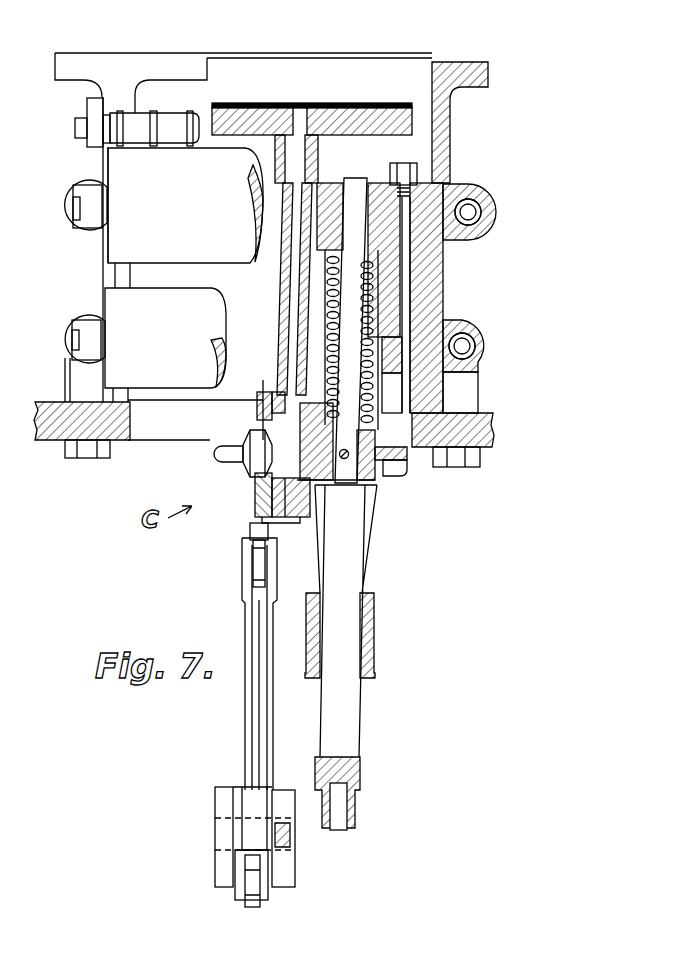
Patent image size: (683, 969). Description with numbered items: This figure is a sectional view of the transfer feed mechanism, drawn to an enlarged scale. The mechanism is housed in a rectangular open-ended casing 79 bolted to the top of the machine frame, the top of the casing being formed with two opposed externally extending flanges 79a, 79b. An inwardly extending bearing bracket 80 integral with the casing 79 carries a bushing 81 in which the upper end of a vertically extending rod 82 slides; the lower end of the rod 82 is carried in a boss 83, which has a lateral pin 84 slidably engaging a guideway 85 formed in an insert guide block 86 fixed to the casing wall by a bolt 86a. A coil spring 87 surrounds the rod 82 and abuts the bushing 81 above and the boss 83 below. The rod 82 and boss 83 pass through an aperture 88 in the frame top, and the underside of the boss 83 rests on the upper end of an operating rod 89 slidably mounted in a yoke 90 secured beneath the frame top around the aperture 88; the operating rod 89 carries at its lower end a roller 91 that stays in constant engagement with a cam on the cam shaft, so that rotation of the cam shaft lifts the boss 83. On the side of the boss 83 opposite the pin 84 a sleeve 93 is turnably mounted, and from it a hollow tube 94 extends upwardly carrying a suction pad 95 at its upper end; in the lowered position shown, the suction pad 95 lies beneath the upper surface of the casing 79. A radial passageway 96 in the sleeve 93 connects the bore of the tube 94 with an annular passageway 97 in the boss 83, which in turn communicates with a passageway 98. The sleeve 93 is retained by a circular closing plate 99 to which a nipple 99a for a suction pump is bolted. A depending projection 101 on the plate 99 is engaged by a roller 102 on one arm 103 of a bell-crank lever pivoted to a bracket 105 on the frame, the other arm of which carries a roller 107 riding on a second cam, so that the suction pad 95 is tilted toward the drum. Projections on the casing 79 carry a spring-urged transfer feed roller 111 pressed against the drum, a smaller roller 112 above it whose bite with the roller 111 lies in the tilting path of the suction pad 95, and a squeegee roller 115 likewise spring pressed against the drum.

The casing 79 is at (157, 58).
The flange 79a is at (463, 72).
The flange 79b is at (79, 60).
The bearing bracket 80 is at (388, 180).
The bushing 81 is at (375, 247).
The rod 82 is at (355, 182).
The boss 83 is at (380, 483).
The pin 84 is at (409, 466).
The guideway 85 is at (393, 402).
The insert guide block 86 is at (417, 335).
The bolt 86a is at (402, 212).
The coil spring 87 is at (330, 311).
The aperture 88 is at (151, 430).
The operating rod 89 is at (352, 555).
The yoke 90 is at (374, 610).
The roller 91 is at (338, 830).
The sleeve 93 is at (291, 518).
The tube 94 is at (283, 286).
The suction pad 95 is at (368, 110).
The radial passageway 96 is at (272, 394).
The annular passageway 97 is at (262, 487).
The passageway 98 is at (256, 460).
The closing plate 99 is at (258, 503).
The nipple 99a is at (212, 452).
The depending projection 101 is at (256, 530).
The roller 102 is at (257, 567).
The arm 103 is at (243, 731).
The bracket 105 is at (217, 798).
The roller 107 is at (245, 899).
The transfer feed roller 111 is at (116, 248).
The roller 112 is at (167, 118).
The squeegee roller 115 is at (165, 338).